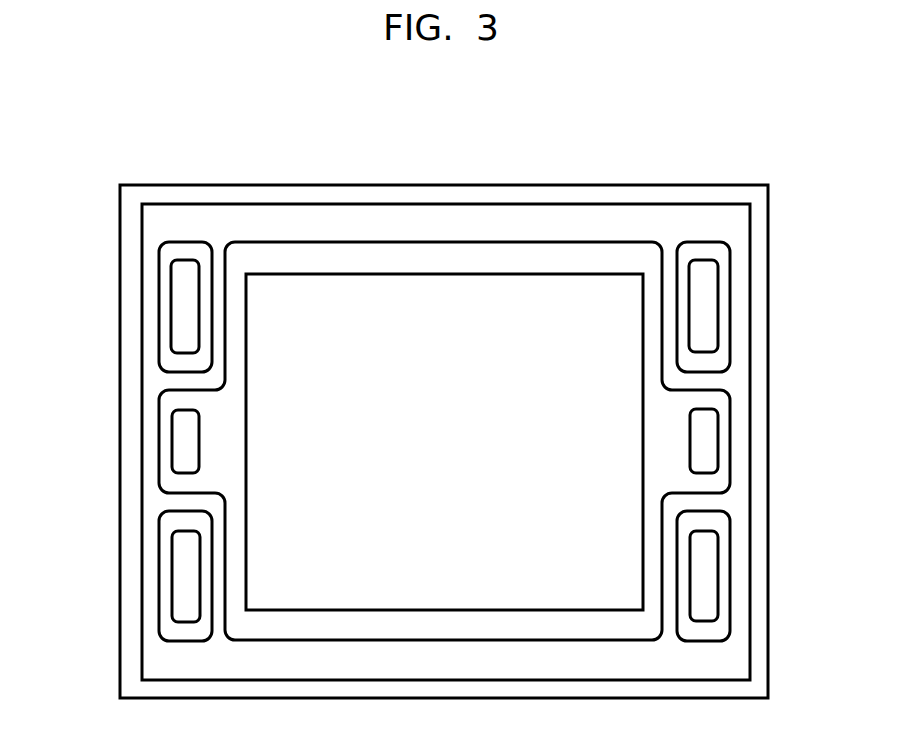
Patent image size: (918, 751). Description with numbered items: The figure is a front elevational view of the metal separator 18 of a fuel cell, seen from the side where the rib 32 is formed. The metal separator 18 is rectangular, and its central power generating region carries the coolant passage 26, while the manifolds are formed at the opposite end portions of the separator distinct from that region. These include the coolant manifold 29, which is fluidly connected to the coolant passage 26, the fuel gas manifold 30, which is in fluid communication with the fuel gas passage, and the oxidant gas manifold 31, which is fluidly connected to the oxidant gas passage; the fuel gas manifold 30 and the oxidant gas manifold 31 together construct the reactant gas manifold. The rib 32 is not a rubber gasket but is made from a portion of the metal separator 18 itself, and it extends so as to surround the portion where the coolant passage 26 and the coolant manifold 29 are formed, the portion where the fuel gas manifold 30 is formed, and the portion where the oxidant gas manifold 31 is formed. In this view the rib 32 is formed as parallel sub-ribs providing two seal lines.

The metal separator 18 is at (570, 184).
The coolant passage 26 is at (368, 290).
The coolant manifold 29 is at (185, 447).
The fuel gas manifold 30 is at (182, 313).
The oxidant gas manifold 31 is at (178, 588).
The rib 32 is at (157, 345).